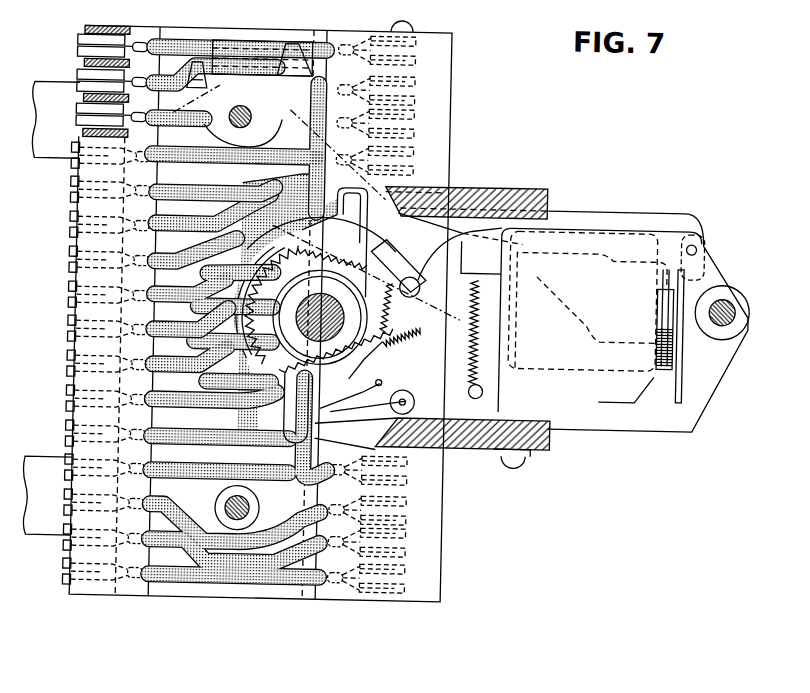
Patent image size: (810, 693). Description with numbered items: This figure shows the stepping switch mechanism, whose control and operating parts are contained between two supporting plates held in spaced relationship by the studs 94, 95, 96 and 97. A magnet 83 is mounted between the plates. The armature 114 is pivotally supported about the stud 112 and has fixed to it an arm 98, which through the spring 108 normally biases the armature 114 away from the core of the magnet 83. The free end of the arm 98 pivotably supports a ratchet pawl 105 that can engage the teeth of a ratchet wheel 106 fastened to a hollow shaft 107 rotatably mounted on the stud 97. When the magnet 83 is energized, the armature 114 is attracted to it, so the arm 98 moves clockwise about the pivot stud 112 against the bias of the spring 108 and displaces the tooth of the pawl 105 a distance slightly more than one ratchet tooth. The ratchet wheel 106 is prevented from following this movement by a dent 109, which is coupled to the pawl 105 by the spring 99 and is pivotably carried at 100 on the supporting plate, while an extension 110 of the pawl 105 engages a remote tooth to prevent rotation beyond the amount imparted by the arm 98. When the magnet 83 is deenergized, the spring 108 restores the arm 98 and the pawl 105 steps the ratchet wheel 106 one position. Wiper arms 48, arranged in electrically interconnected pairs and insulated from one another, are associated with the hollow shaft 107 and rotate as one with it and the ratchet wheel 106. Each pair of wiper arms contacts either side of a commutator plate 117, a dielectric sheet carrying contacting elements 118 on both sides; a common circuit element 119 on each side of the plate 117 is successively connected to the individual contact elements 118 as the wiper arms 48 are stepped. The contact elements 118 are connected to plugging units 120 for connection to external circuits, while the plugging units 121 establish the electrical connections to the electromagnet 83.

The wiper arms 48 is at (359, 249).
The magnet 83 is at (558, 340).
The stud 94 is at (725, 300).
The stud 95 is at (220, 506).
The stud 96 is at (230, 113).
The stud 97 is at (337, 302).
The arm 98 is at (447, 268).
The spring 99 is at (403, 353).
The pivot 100 is at (416, 403).
The ratchet pawl 105 is at (383, 266).
The ratchet wheel 106 is at (352, 397).
The hollow shaft 107 is at (286, 280).
The spring 108 is at (471, 336).
The dent 109 is at (364, 418).
The extension 110 is at (380, 307).
The stud 112 is at (693, 242).
The armature 114 is at (684, 357).
The commutator plate 117 is at (171, 593).
The contacting elements 118 is at (193, 206).
The common circuit element 119 is at (290, 198).
The plugging units 120 is at (75, 355).
The plugging units 121 is at (77, 89).